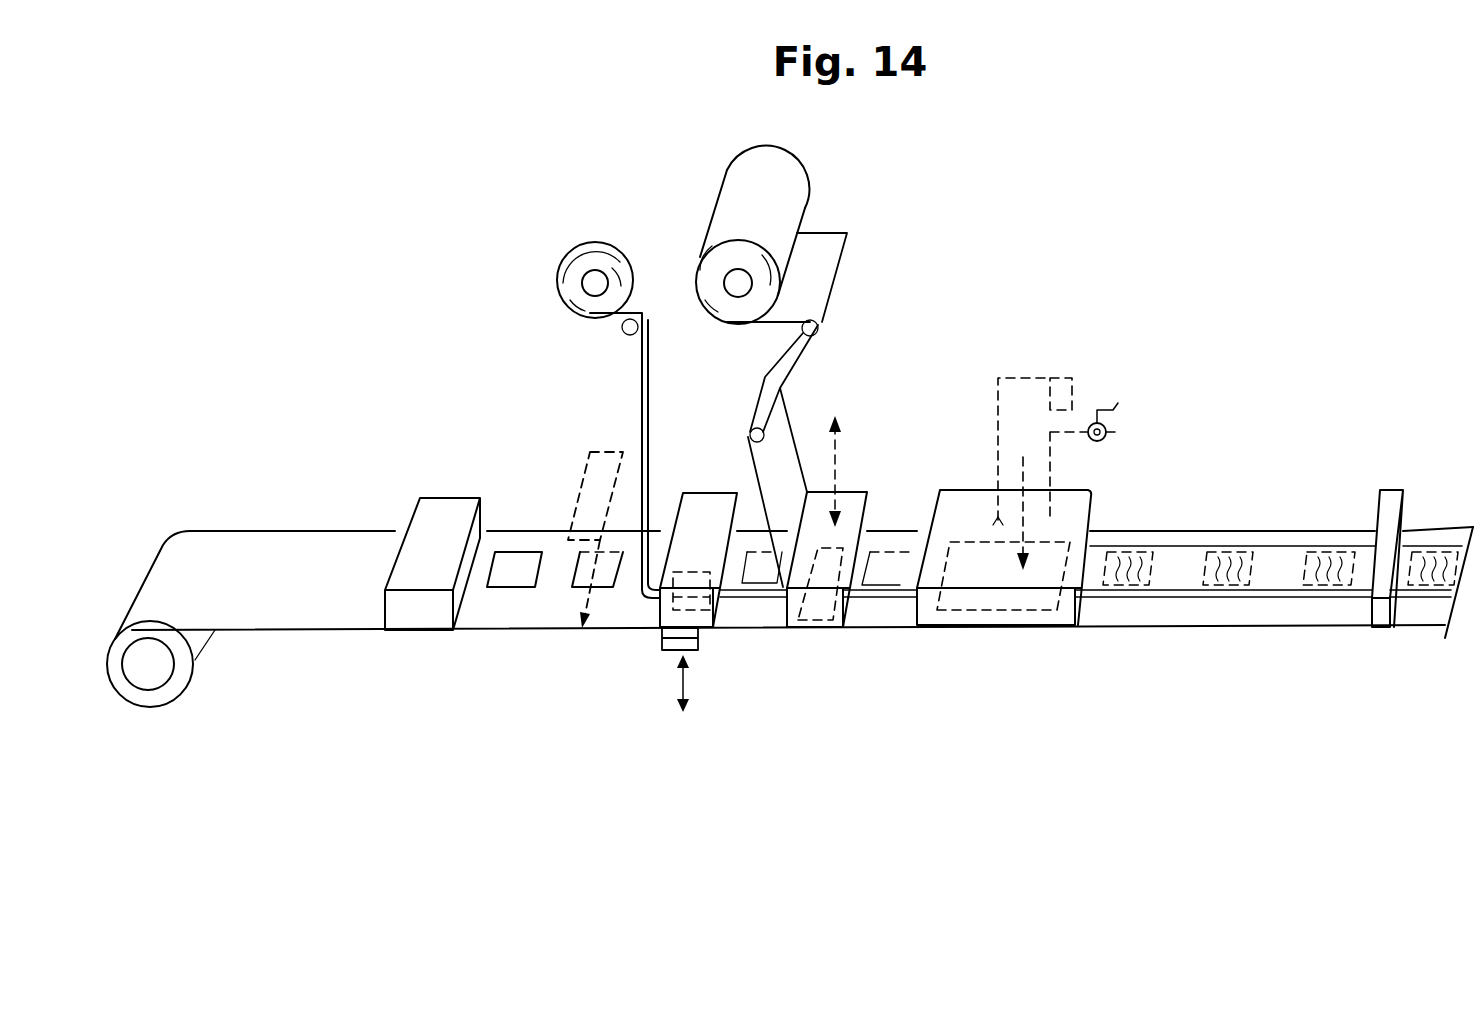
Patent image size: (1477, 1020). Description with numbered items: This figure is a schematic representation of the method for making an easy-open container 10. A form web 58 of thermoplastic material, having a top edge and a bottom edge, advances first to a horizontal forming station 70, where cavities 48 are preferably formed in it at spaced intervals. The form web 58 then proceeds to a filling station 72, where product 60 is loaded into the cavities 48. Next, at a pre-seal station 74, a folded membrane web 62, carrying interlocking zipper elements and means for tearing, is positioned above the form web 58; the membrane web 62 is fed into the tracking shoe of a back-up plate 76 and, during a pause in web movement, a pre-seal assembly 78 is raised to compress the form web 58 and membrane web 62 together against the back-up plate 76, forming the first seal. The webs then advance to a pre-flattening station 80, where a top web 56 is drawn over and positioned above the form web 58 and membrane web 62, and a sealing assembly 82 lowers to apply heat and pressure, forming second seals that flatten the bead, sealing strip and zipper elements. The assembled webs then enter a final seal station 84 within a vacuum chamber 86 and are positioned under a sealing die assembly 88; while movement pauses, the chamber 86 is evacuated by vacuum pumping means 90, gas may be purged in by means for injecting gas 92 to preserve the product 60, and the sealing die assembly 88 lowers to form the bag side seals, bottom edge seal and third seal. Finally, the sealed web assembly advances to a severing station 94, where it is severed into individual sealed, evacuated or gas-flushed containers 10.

The easy-open container 10 is at (1435, 518).
The cavities 48 is at (527, 552).
The top web 56 is at (733, 187).
The form web 58 is at (333, 553).
The product 60 is at (600, 582).
The folded membrane web 62 is at (648, 320).
The horizontal forming station 70 is at (413, 638).
The filling station 72 is at (578, 648).
The pre-seal station 74 is at (708, 490).
The back-up plate 76 is at (697, 615).
The pre-seal assembly 78 is at (666, 652).
The pre-flattening station 80 is at (803, 640).
The sealing assembly 82 is at (836, 630).
The final seal station 84 is at (975, 645).
The vacuum chamber 86 is at (1040, 620).
The sealing die assembly 88 is at (1068, 627).
The vacuum pumping means 90 is at (1115, 432).
The means for injecting gas 92 is at (1062, 372).
The severing station 94 is at (1376, 650).